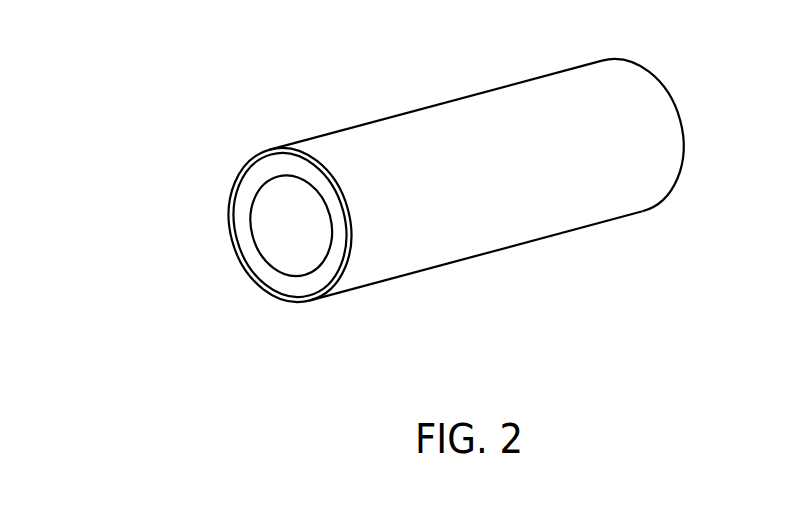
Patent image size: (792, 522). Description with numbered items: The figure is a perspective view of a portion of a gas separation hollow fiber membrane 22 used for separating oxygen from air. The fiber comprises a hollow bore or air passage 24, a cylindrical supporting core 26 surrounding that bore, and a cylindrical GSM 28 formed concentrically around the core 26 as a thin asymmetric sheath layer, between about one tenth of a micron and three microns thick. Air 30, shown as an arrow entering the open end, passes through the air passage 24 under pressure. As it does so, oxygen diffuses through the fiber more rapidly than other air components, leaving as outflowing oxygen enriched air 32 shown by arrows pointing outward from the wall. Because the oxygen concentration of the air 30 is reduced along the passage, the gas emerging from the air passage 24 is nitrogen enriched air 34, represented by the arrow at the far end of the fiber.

The gas separation hollow fiber membrane 22 is at (209, 94).
The air passage 24 is at (270, 289).
The cylindrical supporting core 26 is at (300, 300).
The GSM 28 is at (343, 133).
The air 30 is at (207, 261).
The oxygen enriched air 32 is at (519, 293).
The nitrogen enriched air 34 is at (727, 121).